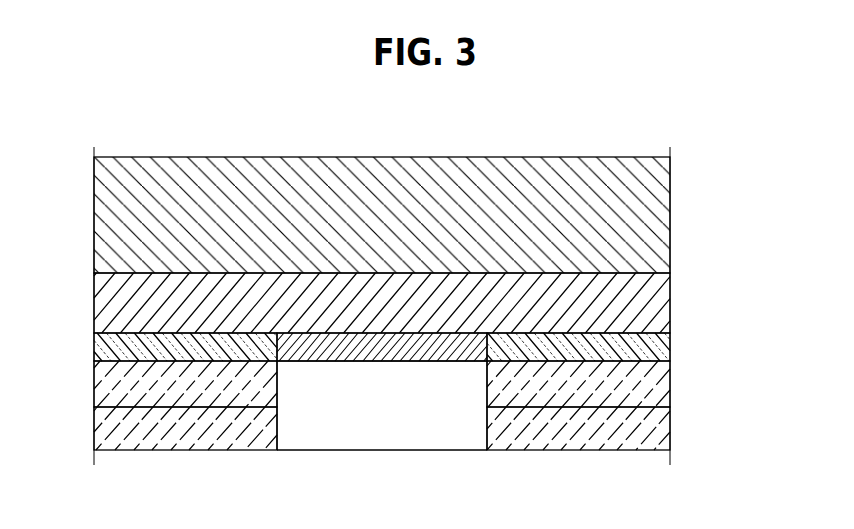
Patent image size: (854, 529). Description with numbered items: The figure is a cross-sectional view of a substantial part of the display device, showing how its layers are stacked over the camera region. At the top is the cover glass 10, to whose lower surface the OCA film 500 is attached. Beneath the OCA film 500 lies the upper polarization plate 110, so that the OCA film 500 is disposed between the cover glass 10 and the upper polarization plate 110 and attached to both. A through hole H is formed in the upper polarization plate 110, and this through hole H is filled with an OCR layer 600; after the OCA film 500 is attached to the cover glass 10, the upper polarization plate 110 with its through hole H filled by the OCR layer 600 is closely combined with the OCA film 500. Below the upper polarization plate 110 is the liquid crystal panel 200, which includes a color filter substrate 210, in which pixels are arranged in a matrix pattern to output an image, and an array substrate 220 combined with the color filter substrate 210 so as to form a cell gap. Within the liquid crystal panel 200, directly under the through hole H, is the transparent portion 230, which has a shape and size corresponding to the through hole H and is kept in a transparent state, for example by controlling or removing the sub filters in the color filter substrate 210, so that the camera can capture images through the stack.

The cover glass 10 is at (664, 207).
The OCA film 500 is at (664, 300).
The upper polarization plate 110 is at (664, 345).
The OCR layer 600 is at (325, 338).
The liquid crystal panel 200 is at (434, 405).
The color filter substrate 210 is at (664, 392).
The array substrate 220 is at (664, 425).
The transparent portion 230 is at (398, 437).
The through hole H is at (466, 360).